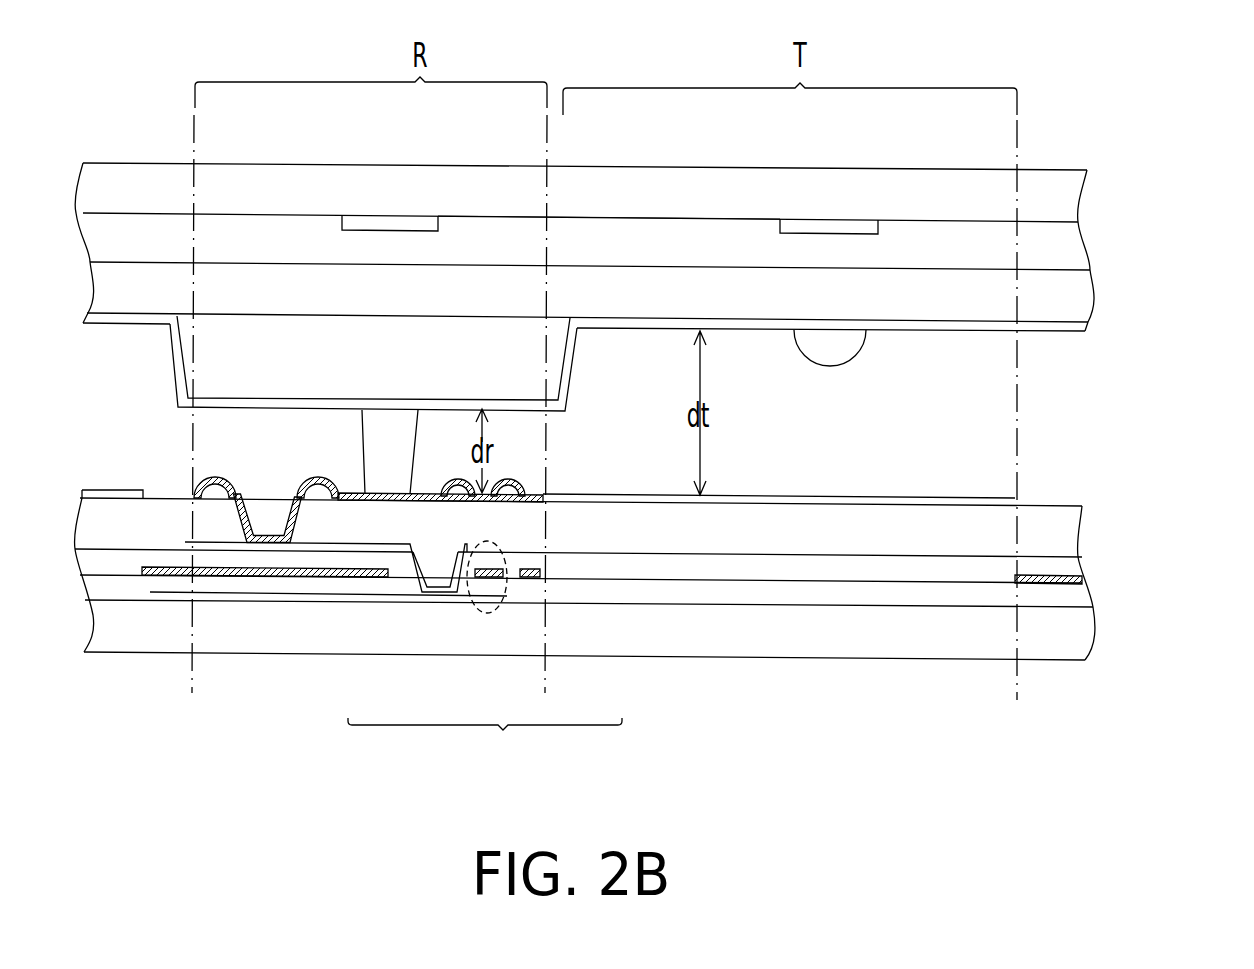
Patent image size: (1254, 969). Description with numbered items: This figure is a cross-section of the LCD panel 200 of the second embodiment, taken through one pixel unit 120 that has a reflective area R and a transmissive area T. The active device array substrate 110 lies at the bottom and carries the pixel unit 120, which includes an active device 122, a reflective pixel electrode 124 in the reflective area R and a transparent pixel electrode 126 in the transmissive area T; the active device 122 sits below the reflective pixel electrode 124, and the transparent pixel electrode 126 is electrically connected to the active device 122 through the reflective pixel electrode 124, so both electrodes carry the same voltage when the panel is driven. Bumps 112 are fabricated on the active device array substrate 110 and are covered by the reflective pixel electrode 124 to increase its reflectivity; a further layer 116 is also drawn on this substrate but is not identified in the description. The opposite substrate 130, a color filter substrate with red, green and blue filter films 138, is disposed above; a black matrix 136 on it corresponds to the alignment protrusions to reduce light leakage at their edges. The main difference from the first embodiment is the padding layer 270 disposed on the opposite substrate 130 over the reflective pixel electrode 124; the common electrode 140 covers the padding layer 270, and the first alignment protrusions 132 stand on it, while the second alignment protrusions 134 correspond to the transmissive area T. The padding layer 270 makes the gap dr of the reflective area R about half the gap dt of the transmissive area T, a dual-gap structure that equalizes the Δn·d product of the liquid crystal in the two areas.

The active device array substrate 110 is at (877, 683).
The bumps 112 is at (320, 498).
The insulating layer 116 is at (1070, 528).
The pixel unit 120 is at (485, 744).
The active device 122 is at (487, 613).
The reflective pixel electrode 124 is at (397, 503).
The transparent pixel electrode 126 is at (563, 500).
The opposite substrate 130 is at (1100, 152).
The first alignment protrusions 132 is at (363, 420).
The second alignment protrusions 134 is at (850, 350).
The black matrix 136 is at (413, 222).
The filter films 138 is at (633, 225).
The common electrode 140 is at (1088, 327).
The padding layer 270 is at (188, 355).
The LCD panel 200 is at (1228, 753).